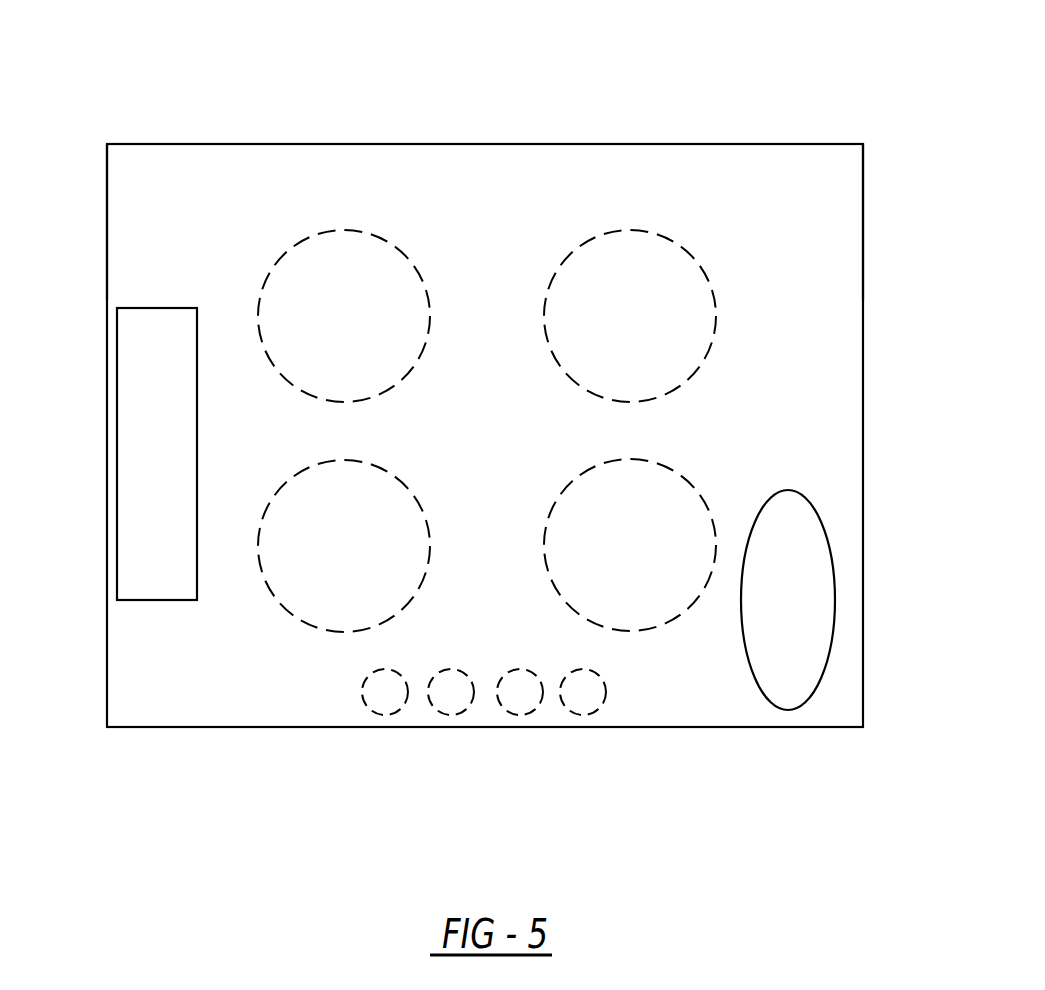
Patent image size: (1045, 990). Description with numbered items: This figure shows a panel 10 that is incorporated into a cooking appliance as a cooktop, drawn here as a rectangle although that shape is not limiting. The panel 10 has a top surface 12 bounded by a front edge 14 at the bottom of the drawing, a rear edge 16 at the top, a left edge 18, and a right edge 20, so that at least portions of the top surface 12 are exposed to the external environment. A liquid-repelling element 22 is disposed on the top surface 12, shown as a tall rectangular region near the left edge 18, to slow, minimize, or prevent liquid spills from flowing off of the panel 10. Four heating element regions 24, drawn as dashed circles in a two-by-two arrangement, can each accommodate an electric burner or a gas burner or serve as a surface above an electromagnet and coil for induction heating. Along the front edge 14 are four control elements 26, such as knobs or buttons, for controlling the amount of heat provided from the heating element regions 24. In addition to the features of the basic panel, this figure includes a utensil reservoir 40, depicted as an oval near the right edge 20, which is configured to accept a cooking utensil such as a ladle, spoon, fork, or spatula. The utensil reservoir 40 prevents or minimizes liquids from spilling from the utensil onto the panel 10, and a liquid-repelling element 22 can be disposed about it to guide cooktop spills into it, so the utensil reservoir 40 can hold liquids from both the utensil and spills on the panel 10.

The panel 10 is at (822, 406).
The top surface 12 is at (724, 157).
The front edge 14 is at (777, 728).
The rear edge 16 is at (408, 143).
The left edge 18 is at (107, 212).
The right edge 20 is at (865, 228).
The liquid-repelling element 22 is at (174, 476).
The heating element region 24 is at (362, 316).
The control element 26 is at (377, 700).
The utensil reservoir 40 is at (808, 616).